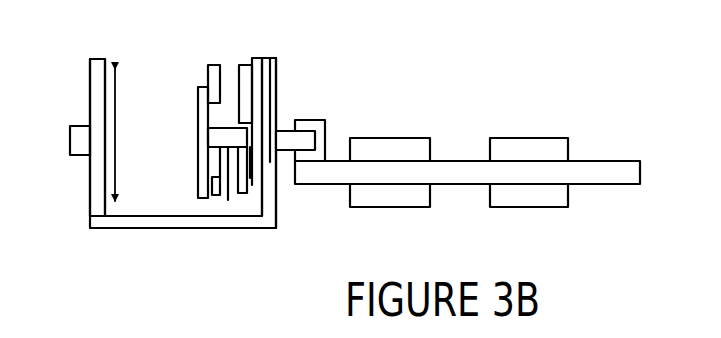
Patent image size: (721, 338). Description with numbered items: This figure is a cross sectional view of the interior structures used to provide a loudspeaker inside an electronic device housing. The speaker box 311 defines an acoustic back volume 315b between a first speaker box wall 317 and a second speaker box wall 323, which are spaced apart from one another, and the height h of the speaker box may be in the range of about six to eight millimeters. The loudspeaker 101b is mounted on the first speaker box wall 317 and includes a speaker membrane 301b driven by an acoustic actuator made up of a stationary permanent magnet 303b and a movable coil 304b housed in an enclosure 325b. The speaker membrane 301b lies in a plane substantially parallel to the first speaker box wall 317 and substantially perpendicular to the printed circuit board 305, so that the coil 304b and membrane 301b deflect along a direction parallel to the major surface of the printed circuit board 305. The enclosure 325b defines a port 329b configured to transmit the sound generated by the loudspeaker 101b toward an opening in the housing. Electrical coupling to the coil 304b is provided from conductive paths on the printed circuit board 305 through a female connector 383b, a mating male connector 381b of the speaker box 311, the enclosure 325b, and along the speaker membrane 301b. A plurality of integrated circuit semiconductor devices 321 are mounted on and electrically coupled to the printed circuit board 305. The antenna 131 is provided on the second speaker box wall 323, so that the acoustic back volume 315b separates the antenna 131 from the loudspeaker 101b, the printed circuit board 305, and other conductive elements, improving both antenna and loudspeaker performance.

The loudspeaker 101b is at (193, 152).
The antenna 131 is at (70, 140).
The speaker membrane 301b is at (197, 112).
The stationary permanent magnet 303b is at (246, 197).
The movable coil 304b is at (229, 150).
The printed circuit board 305 is at (645, 161).
The speaker box 311 is at (120, 230).
The acoustic back volume 315b is at (132, 88).
The first speaker box wall 317 is at (277, 196).
The integrated circuit semiconductor devices 321 is at (390, 138).
The second speaker box wall 323 is at (88, 98).
The enclosure 325b is at (222, 200).
The port 329b is at (228, 72).
The male connector 381b is at (284, 130).
The female connector 383b is at (328, 130).